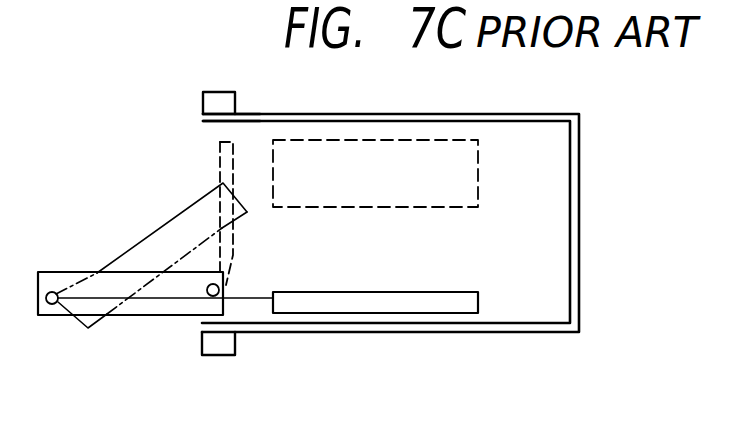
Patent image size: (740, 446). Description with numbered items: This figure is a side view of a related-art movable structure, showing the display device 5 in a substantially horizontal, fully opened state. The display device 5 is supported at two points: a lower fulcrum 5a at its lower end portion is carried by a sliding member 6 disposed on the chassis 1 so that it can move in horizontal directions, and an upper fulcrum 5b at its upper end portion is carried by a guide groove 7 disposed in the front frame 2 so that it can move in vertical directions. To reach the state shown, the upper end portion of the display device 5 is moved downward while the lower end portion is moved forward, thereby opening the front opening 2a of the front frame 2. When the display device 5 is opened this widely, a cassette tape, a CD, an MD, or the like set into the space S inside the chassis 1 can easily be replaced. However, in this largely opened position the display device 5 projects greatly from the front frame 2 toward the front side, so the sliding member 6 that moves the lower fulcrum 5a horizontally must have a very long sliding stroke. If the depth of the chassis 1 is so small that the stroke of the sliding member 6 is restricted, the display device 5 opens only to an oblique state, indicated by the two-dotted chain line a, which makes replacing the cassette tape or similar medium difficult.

The chassis 1 is at (580, 301).
The front frame 2 is at (236, 96).
The front opening 2a is at (206, 127).
The display device 5 is at (140, 316).
The lower fulcrum 5a is at (44, 316).
The upper fulcrum 5b is at (220, 286).
The sliding member 6 is at (378, 305).
The guide groove 7 is at (220, 167).
The two-dotted chain line a is at (123, 251).
The space S is at (479, 166).